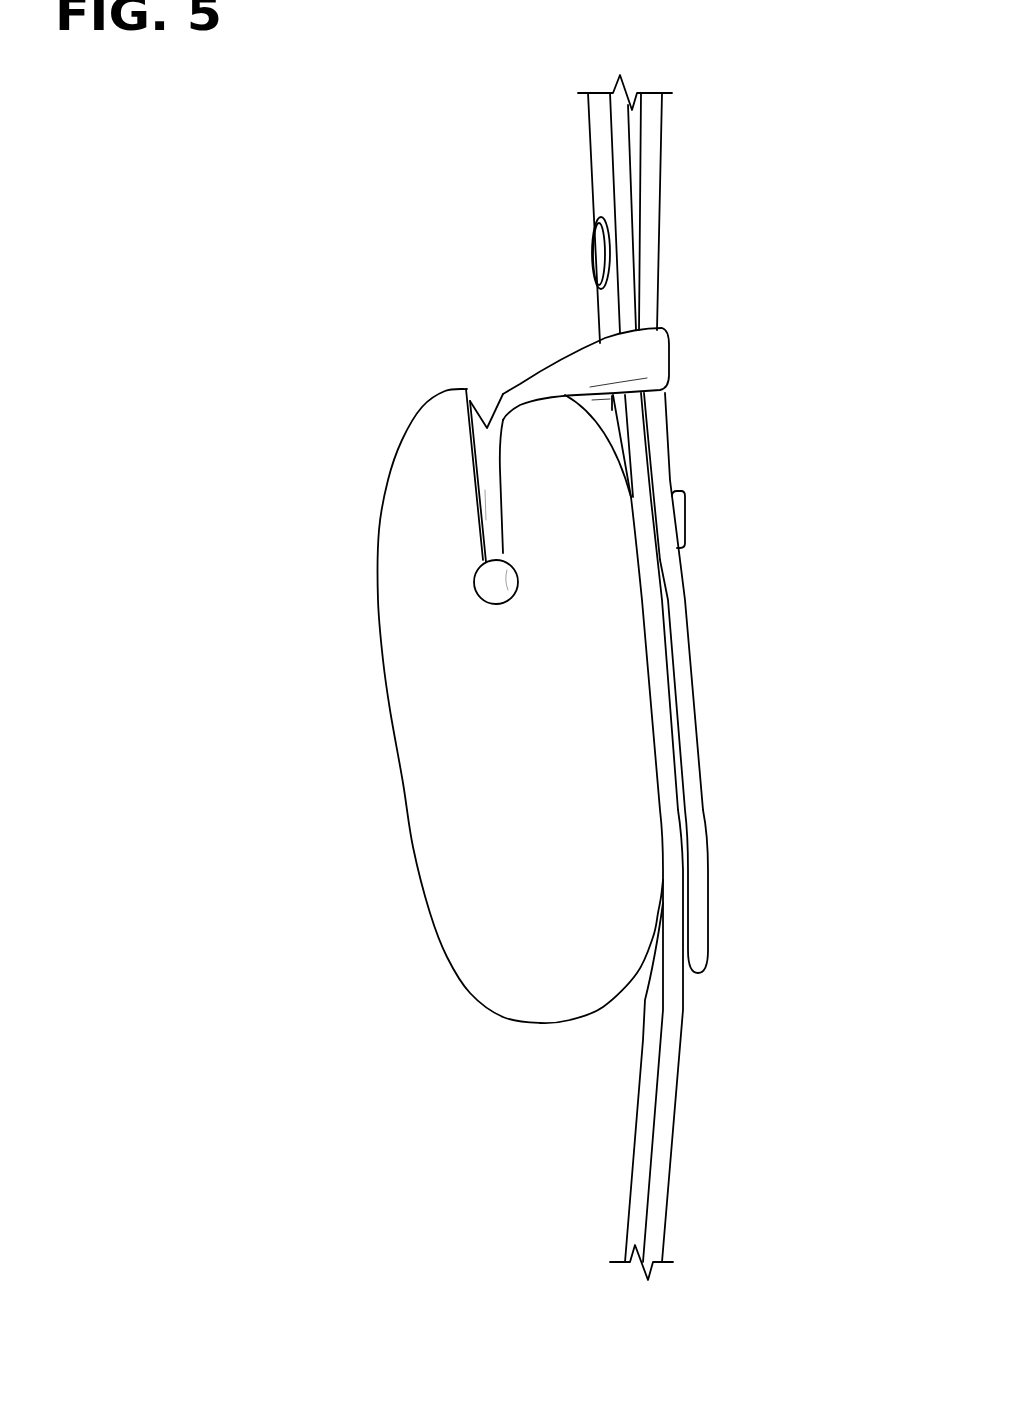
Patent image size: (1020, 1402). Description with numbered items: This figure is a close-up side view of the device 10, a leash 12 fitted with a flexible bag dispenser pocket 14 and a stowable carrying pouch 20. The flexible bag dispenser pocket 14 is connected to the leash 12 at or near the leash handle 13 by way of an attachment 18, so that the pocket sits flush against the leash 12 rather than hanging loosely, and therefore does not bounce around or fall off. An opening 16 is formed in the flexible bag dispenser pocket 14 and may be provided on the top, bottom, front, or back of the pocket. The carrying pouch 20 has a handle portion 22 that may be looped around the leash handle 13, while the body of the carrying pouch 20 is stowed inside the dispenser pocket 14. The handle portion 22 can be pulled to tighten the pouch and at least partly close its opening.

The device 10 is at (345, 234).
The leash 12 is at (676, 1154).
The leash handle 13 is at (655, 210).
The flexible bag dispenser pocket 14 is at (403, 783).
The opening 16 is at (489, 382).
The attachment 18 is at (688, 527).
The carrying pouch 20 is at (497, 570).
The handle portion 22 is at (586, 342).